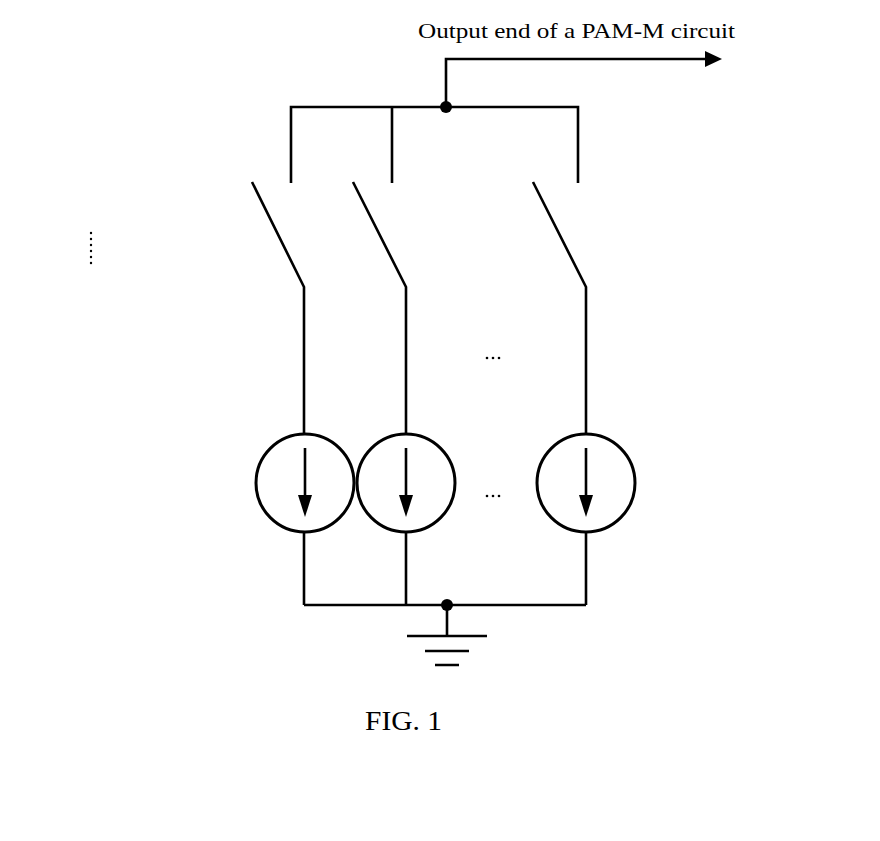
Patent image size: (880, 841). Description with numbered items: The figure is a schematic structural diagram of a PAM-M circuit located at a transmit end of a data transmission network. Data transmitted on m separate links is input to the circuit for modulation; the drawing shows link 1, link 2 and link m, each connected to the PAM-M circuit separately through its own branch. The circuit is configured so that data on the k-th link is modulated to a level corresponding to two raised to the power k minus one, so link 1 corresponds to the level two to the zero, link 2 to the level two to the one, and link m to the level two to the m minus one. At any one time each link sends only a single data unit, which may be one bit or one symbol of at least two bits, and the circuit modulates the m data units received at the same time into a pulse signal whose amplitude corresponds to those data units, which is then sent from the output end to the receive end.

The link 1 is at (248, 196).
The link 2 is at (356, 213).
The link m is at (568, 278).